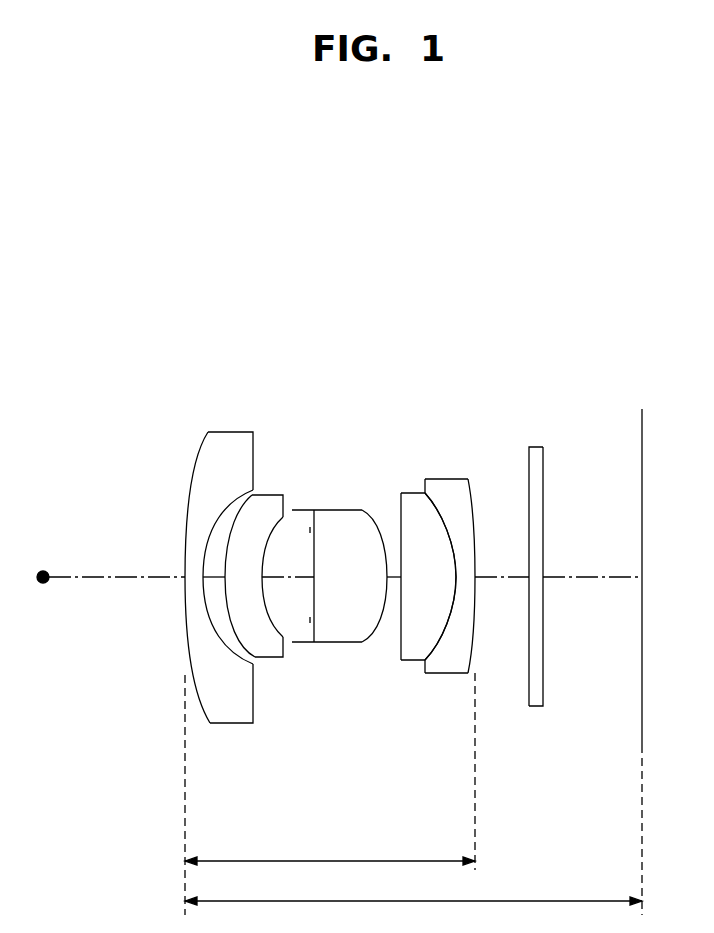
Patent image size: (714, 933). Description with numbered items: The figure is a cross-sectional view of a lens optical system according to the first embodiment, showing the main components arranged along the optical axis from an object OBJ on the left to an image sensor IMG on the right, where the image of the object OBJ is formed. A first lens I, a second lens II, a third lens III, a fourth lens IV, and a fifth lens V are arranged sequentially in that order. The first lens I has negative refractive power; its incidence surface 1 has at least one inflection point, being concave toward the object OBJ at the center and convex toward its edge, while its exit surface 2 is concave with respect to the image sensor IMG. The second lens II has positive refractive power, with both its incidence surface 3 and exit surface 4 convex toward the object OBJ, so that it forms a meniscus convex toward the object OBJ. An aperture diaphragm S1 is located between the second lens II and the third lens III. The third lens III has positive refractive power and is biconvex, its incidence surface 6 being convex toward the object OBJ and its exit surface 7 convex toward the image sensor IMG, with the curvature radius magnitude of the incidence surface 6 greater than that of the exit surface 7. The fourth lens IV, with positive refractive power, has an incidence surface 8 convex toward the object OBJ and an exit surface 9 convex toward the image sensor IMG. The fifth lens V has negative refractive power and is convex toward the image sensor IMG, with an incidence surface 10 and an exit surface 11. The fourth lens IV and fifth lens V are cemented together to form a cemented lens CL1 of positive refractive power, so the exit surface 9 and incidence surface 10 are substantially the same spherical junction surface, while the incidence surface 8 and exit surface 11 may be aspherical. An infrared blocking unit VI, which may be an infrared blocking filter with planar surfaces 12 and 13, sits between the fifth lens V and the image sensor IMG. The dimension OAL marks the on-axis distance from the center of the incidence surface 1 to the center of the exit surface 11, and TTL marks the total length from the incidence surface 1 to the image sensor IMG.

The incidence surface of the first lens 1 is at (190, 460).
The exit surface of the first lens 2 is at (238, 500).
The incidence surface of the second lens 3 is at (255, 505).
The exit surface of the second lens 4 is at (283, 508).
The aperture diaphragm S1 is at (314, 540).
The incidence surface of the third lens 6 is at (345, 512).
The exit surface of the third lens 7 is at (383, 535).
The incidence surface of the fourth lens 8 is at (398, 500).
The exit surface of the fourth lens 9 is at (424, 504).
The incidence surface of the fifth lens 10 is at (440, 508).
The exit surface of the fifth lens 11 is at (470, 493).
The incidence surface of the infrared blocking unit 12 is at (529, 456).
The exit surface of the infrared blocking unit 13 is at (543, 456).
The image sensor IMG is at (642, 420).
The object OBJ is at (44, 571).
The first lens I is at (214, 586).
The second lens II is at (269, 555).
The third lens III is at (350, 581).
The fourth lens IV is at (422, 561).
The fifth lens V is at (459, 549).
The infrared blocking unit VI is at (532, 591).
The cemented lens CL1 is at (441, 574).
The distance from first lens incidence surface to fifth lens exit surface OAL is at (330, 794).
The total length of the lens optical system TTL is at (413, 913).